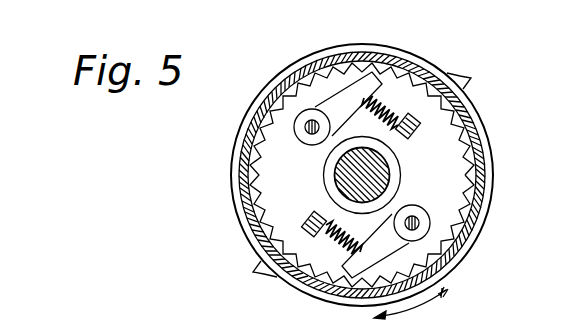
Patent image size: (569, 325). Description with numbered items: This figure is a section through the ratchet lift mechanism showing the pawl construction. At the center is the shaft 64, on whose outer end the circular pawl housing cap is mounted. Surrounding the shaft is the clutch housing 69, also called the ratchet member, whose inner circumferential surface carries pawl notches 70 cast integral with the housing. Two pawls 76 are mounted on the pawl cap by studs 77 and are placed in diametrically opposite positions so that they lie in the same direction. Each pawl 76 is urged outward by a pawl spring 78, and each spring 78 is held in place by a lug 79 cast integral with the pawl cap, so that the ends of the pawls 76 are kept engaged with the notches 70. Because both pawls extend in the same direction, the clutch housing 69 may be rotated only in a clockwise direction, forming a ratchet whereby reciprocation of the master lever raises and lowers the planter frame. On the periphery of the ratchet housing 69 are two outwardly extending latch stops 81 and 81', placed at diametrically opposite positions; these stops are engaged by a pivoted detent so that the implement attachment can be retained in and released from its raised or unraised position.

The shaft 64 is at (376, 174).
The clutch housing 69 is at (465, 140).
The pawl notches 70 is at (480, 200).
The pawls 76 is at (297, 125).
The studs 77 is at (317, 136).
The pawl springs 78 is at (385, 97).
The lug 79 is at (413, 132).
The latch stop 81 is at (486, 71).
The latch stop 81' is at (245, 279).